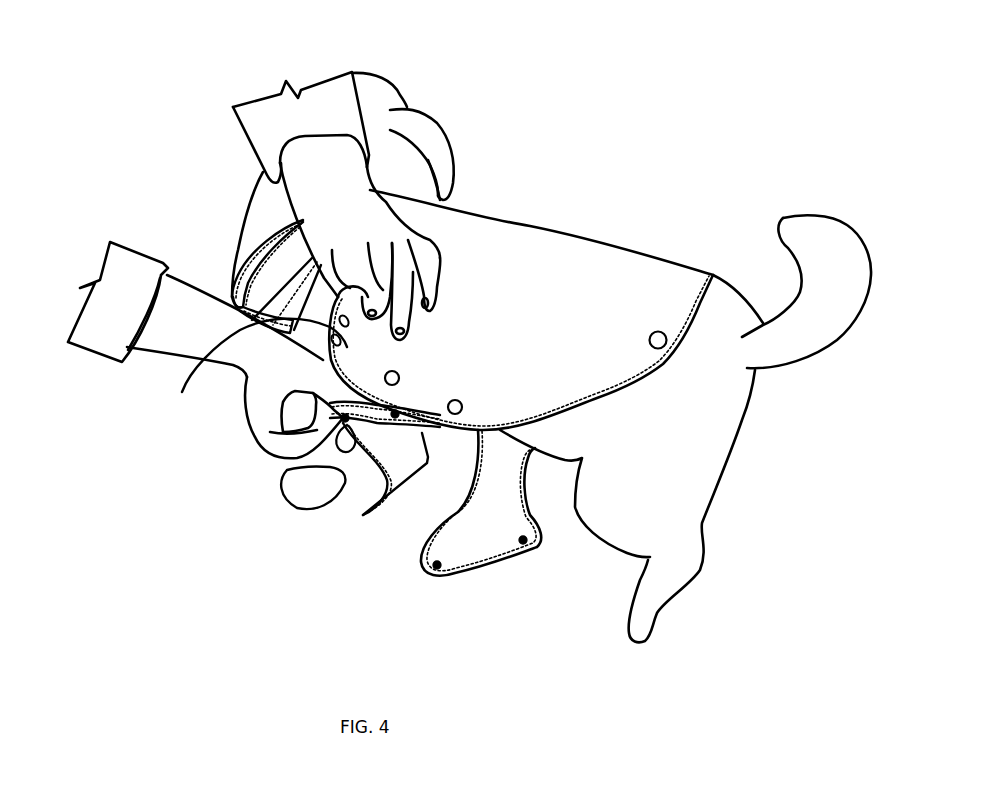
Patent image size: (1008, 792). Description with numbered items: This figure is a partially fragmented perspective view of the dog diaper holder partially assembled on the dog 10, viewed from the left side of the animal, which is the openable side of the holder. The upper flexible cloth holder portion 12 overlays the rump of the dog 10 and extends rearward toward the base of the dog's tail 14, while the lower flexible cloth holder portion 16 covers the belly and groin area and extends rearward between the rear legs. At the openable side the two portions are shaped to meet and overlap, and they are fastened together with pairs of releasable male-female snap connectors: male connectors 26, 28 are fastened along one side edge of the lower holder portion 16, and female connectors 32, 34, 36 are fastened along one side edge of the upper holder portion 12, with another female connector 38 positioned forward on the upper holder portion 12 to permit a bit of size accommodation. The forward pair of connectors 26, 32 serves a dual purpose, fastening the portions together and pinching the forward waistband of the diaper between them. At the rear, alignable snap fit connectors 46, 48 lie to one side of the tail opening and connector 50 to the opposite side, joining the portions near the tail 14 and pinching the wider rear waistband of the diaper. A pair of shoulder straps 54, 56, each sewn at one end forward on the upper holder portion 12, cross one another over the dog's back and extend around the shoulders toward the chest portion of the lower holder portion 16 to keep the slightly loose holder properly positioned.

The dog 10 is at (436, 71).
The upper flexible cloth holder portion 12 is at (518, 257).
The dog's tail 14 is at (786, 217).
The lower flexible cloth holder portion 16 is at (398, 467).
The male connector 26 is at (287, 470).
The male connector 28 is at (350, 496).
The female connector 32 is at (350, 360).
The female connector 34 is at (392, 372).
The female connector 36 is at (453, 401).
The female connector 38 is at (250, 363).
The male snap fit connector 46 is at (448, 578).
The female snap fit connector 48 is at (649, 341).
The male snap fit connector 50 is at (535, 552).
The shoulder strap 54 is at (280, 292).
The shoulder strap 56 is at (233, 287).